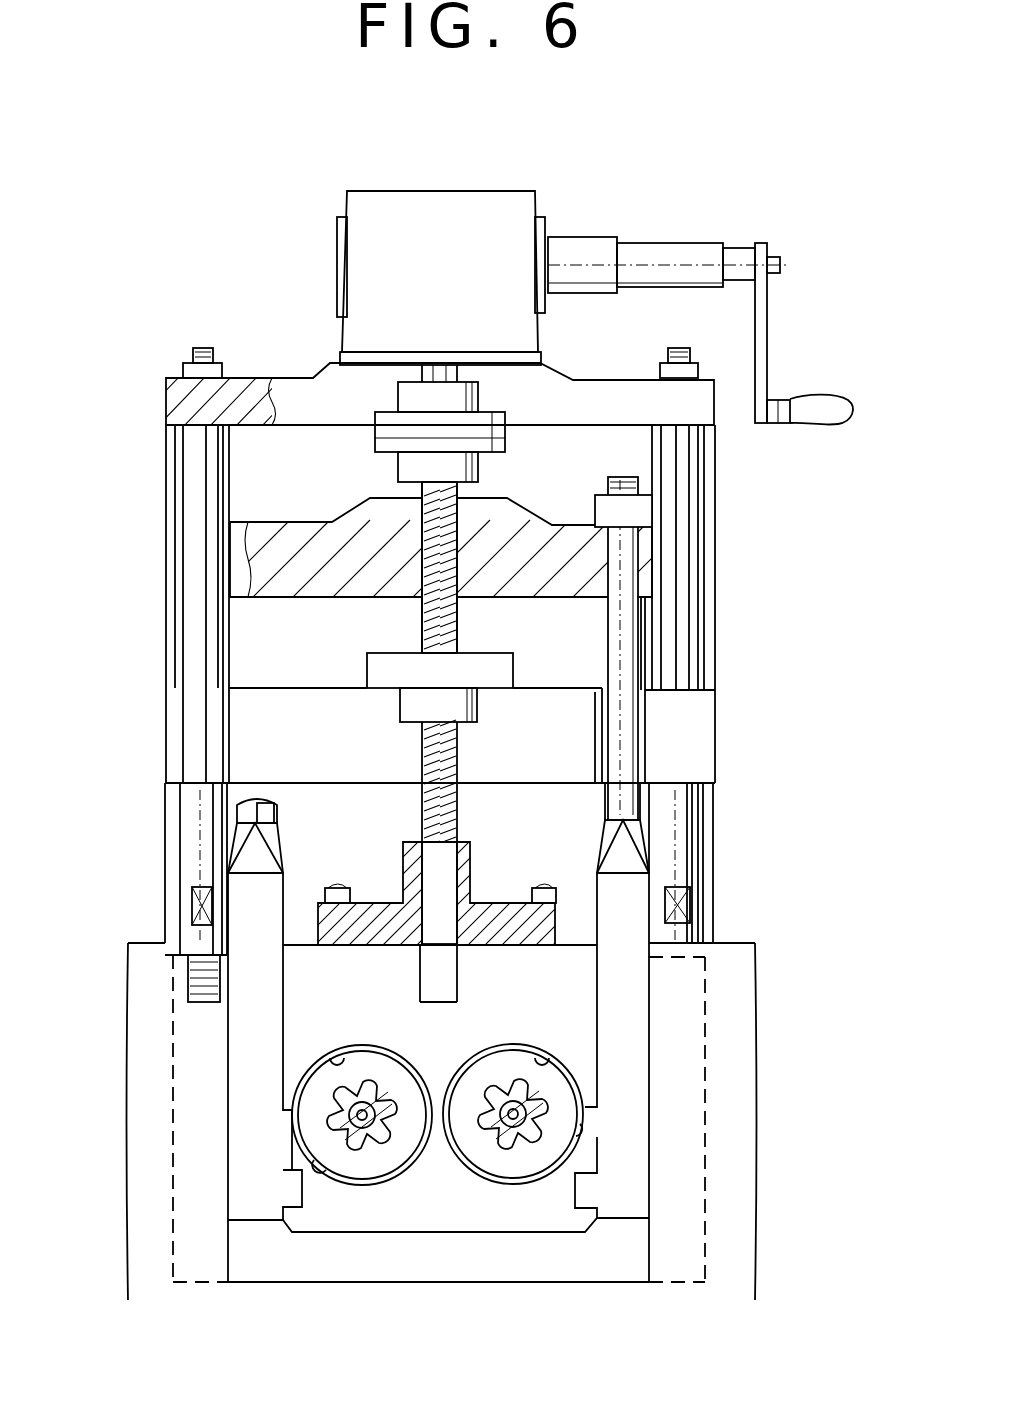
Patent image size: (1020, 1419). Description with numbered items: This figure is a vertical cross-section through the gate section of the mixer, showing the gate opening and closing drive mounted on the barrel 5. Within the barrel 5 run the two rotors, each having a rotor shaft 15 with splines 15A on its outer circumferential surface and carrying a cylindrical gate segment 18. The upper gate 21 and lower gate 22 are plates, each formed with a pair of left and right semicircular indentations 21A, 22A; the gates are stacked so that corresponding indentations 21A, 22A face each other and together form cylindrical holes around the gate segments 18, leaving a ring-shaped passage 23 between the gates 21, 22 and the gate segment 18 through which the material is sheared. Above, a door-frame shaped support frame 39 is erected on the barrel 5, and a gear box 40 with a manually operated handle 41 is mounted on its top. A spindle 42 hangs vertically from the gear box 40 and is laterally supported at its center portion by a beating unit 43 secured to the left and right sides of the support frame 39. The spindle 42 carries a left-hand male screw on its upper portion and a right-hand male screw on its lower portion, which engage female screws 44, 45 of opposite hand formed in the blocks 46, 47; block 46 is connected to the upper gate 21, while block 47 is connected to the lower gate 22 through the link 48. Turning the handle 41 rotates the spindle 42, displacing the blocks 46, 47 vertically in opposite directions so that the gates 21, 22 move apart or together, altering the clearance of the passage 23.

The barrel 5 is at (675, 1040).
The rotor shaft 15 is at (376, 1152).
The splines 15A is at (360, 1150).
The gate segment 18 is at (342, 1166).
The upper gate 21 is at (512, 991).
The semicircular indentations 21A is at (338, 1058).
The lower gate 22 is at (456, 1213).
The semicircular indentations 22A is at (322, 1166).
The passage 23 is at (400, 1170).
The support frame 39 is at (182, 446).
The gear box 40 is at (510, 212).
The handle 41 is at (768, 344).
The spindle 42 is at (430, 662).
The beating unit 43 is at (498, 718).
The female screw 44 is at (435, 830).
The female screw 45 is at (432, 580).
The block 46 is at (473, 882).
The block 47 is at (513, 517).
The link 48 is at (277, 893).